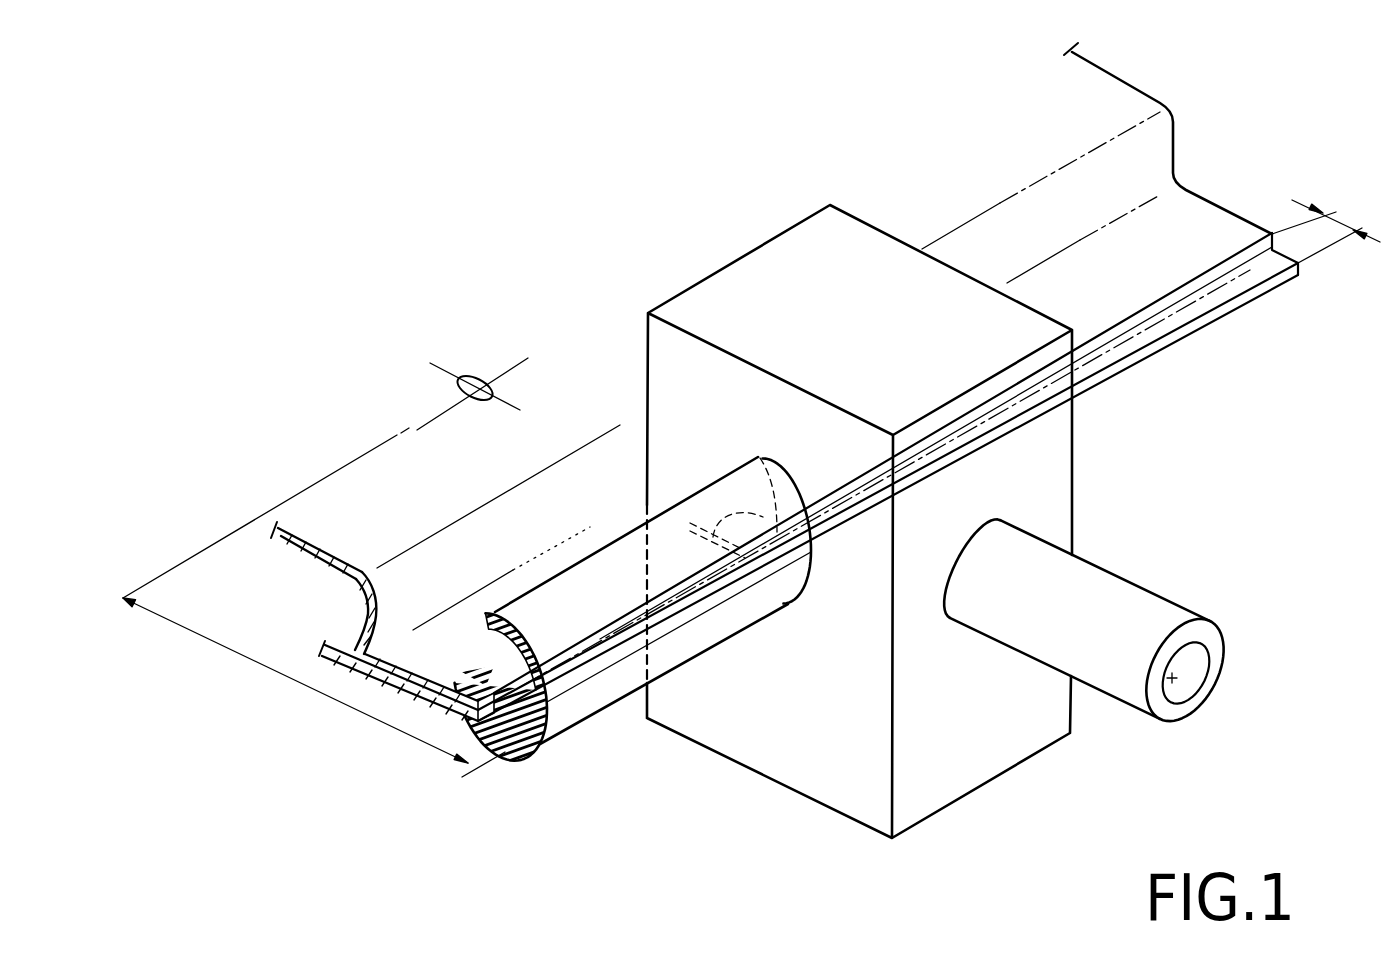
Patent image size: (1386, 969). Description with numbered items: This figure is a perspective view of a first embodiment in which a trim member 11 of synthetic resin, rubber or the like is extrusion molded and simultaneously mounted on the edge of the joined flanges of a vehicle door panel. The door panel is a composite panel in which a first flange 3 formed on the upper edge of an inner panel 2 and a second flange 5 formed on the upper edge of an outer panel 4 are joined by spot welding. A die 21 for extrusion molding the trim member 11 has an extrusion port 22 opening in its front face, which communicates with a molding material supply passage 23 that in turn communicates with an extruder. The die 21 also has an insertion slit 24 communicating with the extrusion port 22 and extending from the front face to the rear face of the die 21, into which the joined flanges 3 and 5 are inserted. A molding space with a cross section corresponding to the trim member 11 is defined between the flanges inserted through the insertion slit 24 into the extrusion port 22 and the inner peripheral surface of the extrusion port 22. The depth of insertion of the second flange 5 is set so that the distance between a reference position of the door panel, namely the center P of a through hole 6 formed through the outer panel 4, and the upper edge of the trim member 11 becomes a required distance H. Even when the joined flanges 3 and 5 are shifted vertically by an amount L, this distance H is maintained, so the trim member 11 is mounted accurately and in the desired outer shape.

The inner panel 2 is at (355, 642).
The first flange 3 is at (432, 684).
The outer panel 4 is at (300, 549).
The second flange 5 is at (432, 684).
The through hole 6 is at (481, 402).
The trim member 11 is at (590, 720).
The die 21 is at (1073, 464).
The extrusion port 22 is at (781, 606).
The molding material supply passage 23 is at (1192, 677).
The insertion slit 24 is at (643, 505).
The center of through hole P is at (481, 376).
The required distance H is at (314, 606).
The amount of vertical shift L is at (1324, 212).